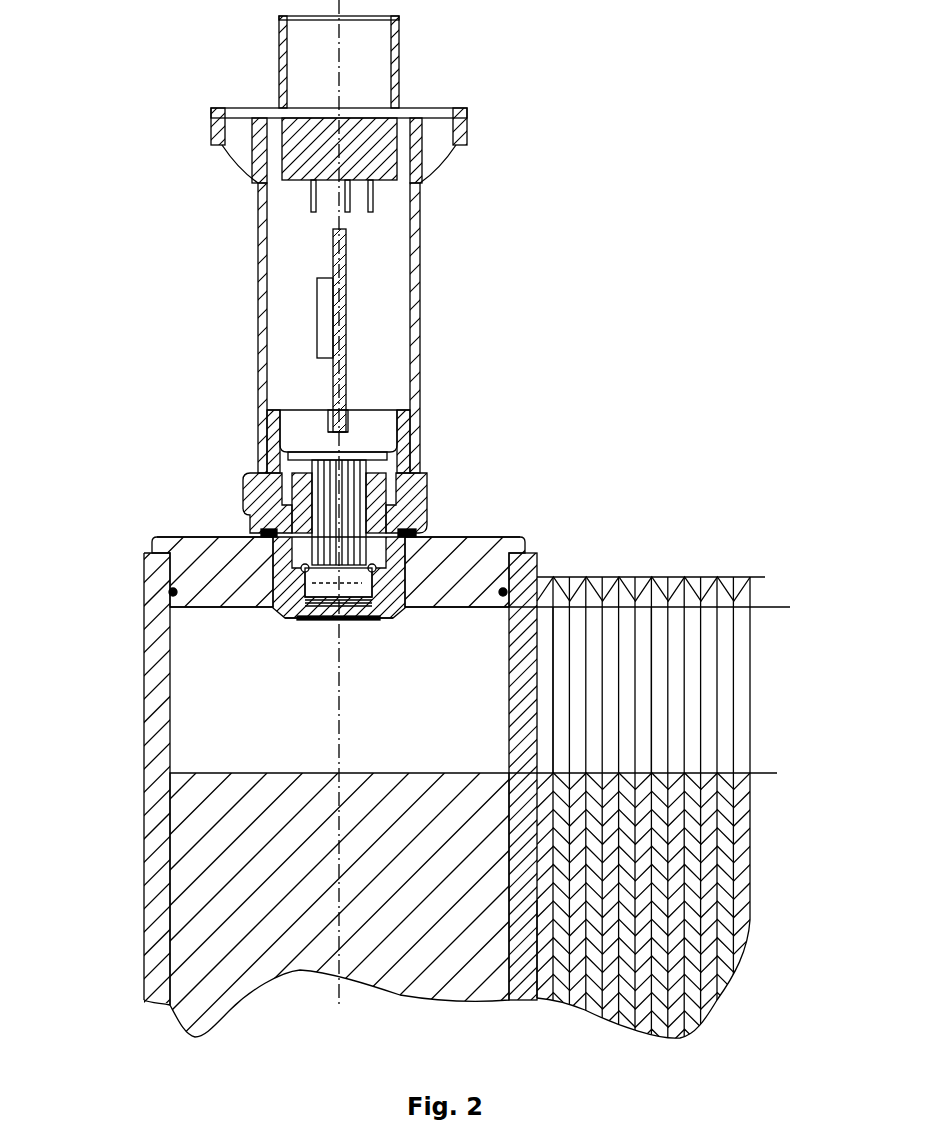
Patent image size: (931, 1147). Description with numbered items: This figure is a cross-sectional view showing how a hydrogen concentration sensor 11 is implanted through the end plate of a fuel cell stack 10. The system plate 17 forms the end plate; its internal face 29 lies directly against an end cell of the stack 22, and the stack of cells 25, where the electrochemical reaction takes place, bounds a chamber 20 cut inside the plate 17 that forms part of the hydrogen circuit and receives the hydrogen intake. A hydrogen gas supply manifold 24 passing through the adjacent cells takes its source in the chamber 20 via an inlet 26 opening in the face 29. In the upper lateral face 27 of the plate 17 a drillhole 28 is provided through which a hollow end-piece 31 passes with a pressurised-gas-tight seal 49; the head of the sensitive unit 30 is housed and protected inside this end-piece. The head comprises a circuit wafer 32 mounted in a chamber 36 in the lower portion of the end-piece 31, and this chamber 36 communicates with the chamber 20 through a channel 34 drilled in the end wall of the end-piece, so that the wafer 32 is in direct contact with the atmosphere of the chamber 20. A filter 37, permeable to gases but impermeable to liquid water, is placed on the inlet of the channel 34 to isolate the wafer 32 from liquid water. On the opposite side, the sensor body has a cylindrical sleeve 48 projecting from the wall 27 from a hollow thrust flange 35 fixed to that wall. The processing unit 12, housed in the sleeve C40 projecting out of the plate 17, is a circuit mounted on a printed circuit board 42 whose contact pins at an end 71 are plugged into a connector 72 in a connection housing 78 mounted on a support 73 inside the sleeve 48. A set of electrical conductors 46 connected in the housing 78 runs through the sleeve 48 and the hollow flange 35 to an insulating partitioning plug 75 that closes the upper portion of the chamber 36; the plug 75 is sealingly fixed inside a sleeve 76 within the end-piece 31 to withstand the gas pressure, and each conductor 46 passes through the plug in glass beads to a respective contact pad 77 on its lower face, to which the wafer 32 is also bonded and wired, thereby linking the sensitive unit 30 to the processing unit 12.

The fuel cell stack 10 is at (752, 390).
The hydrogen concentration sensor 11 is at (490, 325).
The processing unit 12 is at (310, 322).
The sleeve C40 is at (418, 297).
The printed circuit board 42 is at (340, 251).
The end of the printed circuit board 71 is at (340, 408).
The connector 72 is at (347, 422).
The support 73 is at (302, 433).
The connection housing 78 is at (243, 483).
The electrical conductors 46 is at (360, 488).
The cylindrical sleeve 48 is at (355, 490).
The hollow thrust flange 35 is at (427, 490).
The pressurised-gas-tight seal 49 is at (396, 581).
The sleeve 76 is at (265, 540).
The insulating partitioning plug 75 is at (276, 577).
The chamber 36 is at (305, 570).
The filter 37 is at (310, 622).
The contact pad 77 is at (383, 605).
The circuit wafer 32 is at (362, 620).
The channel 34 is at (345, 622).
The sensitive unit 30 is at (322, 634).
The chamber 20 is at (262, 704).
The system plate 17 is at (138, 800).
The upper lateral face 27 is at (508, 537).
The drillhole 28 is at (395, 586).
The hollow end-piece 31 is at (553, 610).
The stack 22 is at (760, 577).
The hydrogen gas supply manifold 24 is at (693, 730).
The stack of cells 25 is at (700, 790).
The inlet 26 is at (512, 732).
The internal face 29 is at (535, 896).